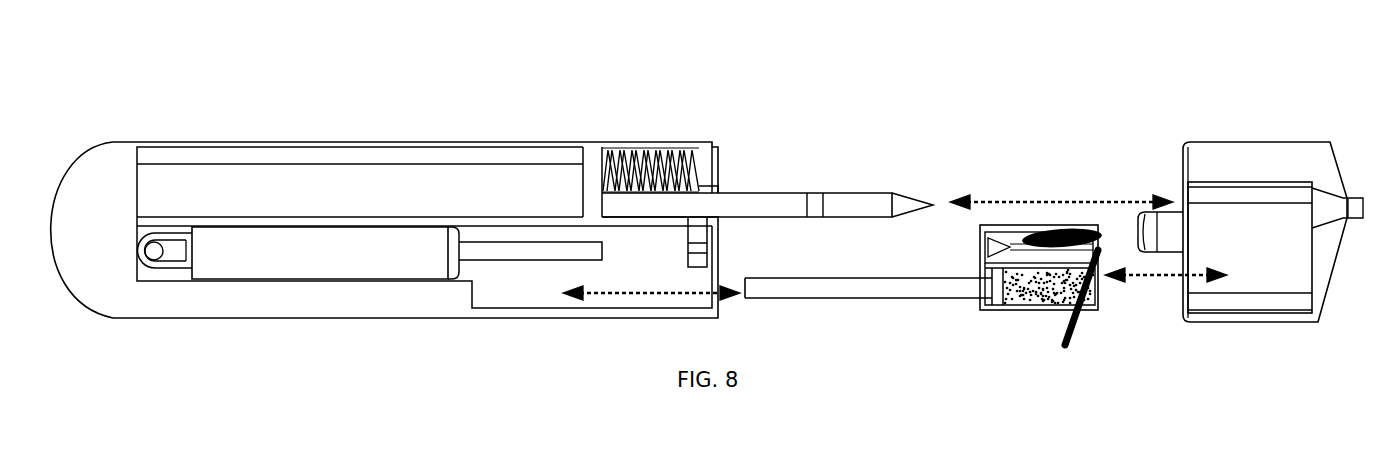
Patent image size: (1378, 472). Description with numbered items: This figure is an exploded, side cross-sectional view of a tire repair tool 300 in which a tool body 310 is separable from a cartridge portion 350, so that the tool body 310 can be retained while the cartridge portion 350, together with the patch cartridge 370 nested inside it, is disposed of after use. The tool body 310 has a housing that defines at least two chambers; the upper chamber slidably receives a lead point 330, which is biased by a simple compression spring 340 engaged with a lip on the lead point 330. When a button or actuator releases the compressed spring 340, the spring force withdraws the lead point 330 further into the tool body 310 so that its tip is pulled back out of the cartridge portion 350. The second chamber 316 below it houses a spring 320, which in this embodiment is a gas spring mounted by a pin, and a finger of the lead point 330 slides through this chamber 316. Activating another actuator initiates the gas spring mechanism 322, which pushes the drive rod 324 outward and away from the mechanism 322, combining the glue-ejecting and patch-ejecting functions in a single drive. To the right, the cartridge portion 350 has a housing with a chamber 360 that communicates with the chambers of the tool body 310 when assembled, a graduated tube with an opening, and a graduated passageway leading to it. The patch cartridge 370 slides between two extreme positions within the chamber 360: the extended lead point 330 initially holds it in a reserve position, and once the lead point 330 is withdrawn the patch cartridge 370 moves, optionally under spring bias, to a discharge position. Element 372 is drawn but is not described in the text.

The tire repair tool 300 is at (612, 96).
The tool body 310 is at (113, 317).
The chamber 316 is at (664, 280).
The spring 320 is at (344, 267).
The gas spring mechanism 322 is at (245, 280).
The drive rod 324 is at (532, 261).
The lead point 330 is at (790, 193).
The compression spring 340 is at (665, 148).
The cartridge portion 350 is at (1290, 142).
The chamber 360 is at (1267, 258).
The patch cartridge 370 is at (987, 311).
The reservoir rod 372 is at (840, 299).